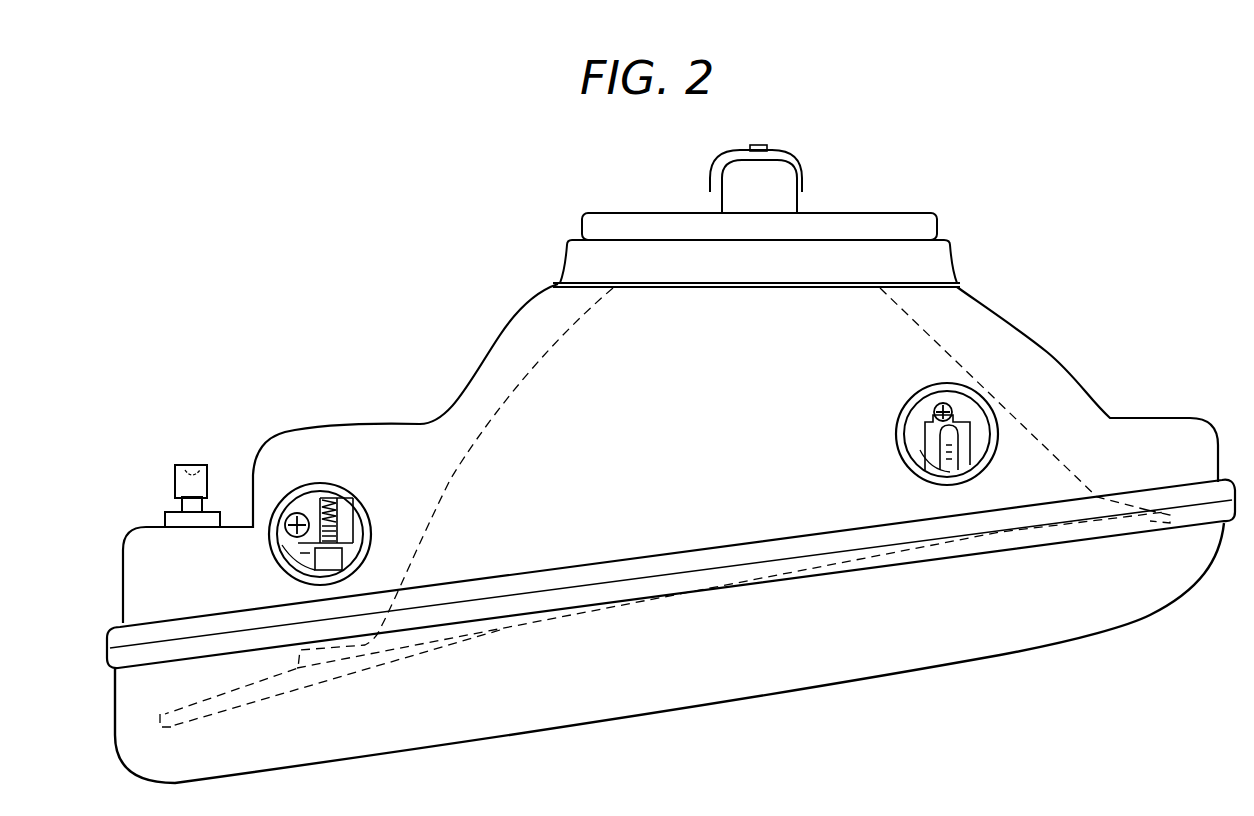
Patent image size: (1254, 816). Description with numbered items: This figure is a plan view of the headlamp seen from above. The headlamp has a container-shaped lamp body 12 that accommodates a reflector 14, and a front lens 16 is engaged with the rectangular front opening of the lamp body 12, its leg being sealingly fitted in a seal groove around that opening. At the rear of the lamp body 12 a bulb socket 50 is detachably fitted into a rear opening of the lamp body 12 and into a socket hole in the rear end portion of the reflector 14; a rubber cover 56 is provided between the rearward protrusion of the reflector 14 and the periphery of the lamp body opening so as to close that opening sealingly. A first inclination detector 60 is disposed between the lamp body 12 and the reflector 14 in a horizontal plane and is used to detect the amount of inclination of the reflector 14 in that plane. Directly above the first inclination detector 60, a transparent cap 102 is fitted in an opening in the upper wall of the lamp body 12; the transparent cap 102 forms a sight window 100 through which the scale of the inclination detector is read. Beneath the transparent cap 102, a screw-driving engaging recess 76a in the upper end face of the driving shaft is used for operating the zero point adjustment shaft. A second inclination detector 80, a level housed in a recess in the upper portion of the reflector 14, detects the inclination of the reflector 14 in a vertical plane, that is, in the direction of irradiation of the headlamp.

The lamp body 12 is at (477, 357).
The reflector 14 is at (557, 338).
The front lens 16 is at (1058, 613).
The bulb socket 50 is at (814, 188).
The rubber cover 56 is at (605, 228).
The first inclination detector 60 is at (332, 597).
The screw-driving engaging recess 76a is at (298, 513).
The second inclination detector 80 is at (950, 496).
The sight window 100 is at (311, 492).
The transparent cap 102 is at (278, 515).